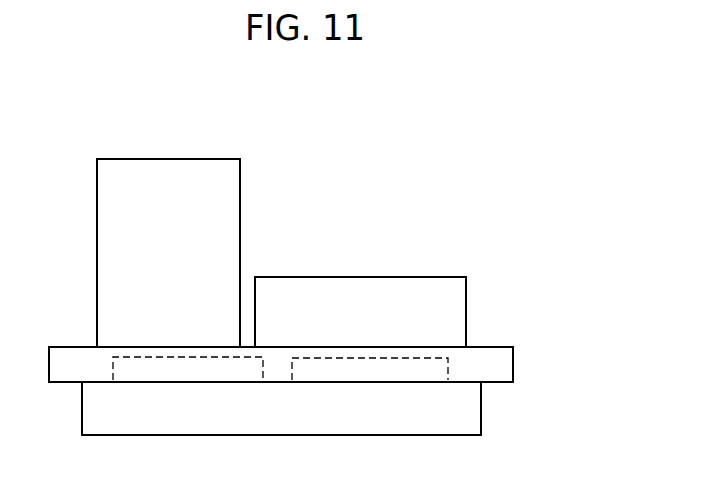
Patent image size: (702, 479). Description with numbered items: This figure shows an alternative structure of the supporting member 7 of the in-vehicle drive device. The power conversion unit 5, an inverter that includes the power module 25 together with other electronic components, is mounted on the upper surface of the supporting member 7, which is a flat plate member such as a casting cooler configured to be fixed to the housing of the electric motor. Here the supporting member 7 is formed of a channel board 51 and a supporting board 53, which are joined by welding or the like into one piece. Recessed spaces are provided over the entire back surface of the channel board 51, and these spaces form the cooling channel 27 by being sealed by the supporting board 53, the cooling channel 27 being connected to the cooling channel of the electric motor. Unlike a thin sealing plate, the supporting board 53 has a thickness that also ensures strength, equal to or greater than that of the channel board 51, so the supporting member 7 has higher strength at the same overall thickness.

The power conversion unit 5 is at (310, 167).
The power module 25 is at (395, 288).
The cooling channel 27 is at (184, 372).
The supporting member 7 is at (344, 386).
The channel board 51 is at (513, 362).
The supporting board 53 is at (481, 412).